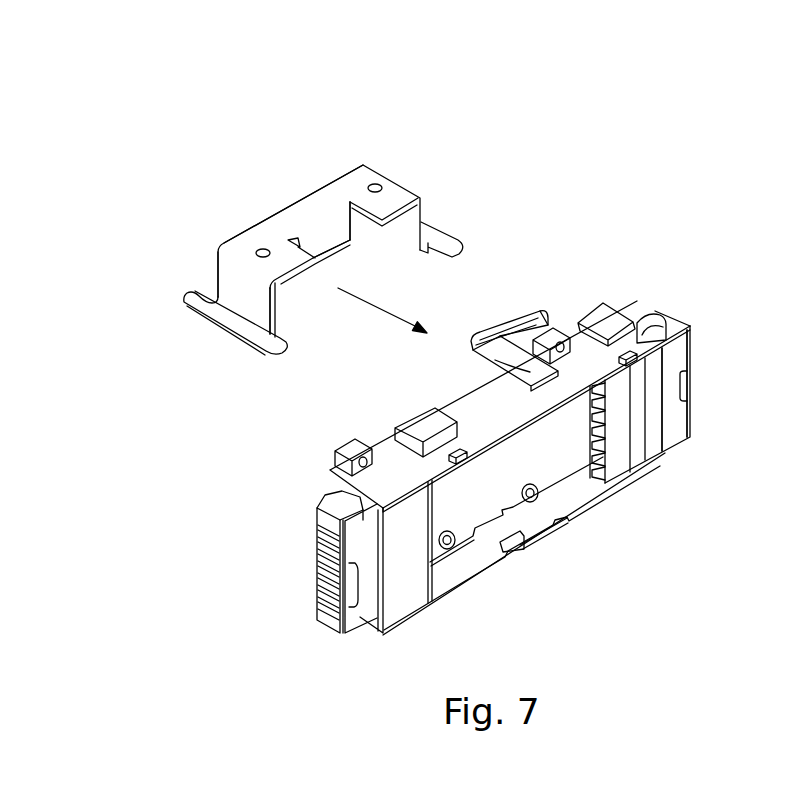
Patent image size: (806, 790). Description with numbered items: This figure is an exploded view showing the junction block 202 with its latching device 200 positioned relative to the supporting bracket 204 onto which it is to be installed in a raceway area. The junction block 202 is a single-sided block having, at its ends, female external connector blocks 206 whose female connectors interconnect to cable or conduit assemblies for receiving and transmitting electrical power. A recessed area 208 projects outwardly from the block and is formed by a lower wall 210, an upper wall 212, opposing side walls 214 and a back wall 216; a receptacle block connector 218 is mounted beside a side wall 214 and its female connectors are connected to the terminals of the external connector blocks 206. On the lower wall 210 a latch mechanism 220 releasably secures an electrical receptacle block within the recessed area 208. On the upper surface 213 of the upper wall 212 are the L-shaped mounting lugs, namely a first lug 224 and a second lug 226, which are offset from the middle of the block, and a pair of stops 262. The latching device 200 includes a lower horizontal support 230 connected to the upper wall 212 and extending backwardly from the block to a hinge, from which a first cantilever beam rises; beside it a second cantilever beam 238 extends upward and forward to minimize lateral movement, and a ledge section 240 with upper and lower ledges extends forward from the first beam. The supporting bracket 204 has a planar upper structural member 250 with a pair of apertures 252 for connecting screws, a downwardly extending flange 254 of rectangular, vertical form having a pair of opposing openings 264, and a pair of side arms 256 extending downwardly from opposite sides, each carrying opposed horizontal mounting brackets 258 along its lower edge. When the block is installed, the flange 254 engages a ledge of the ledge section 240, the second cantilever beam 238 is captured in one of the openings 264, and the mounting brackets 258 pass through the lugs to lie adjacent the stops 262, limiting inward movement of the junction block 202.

The latching device 200 is at (517, 305).
The junction block 202 is at (706, 377).
The supporting bracket 204 is at (367, 148).
The female external connector block 206 is at (304, 579).
The recessed area 208 is at (557, 477).
The lower wall 210 is at (608, 491).
The upper wall 212 is at (397, 462).
The upper surface 213 is at (510, 404).
The side wall 214 is at (637, 397).
The back wall 216 is at (488, 516).
The receptacle block connector 218 is at (603, 453).
The latch mechanism 220 is at (533, 558).
The first lug 224 is at (418, 415).
The second lug 226 is at (610, 305).
The lower horizontal support 230 is at (473, 362).
The second cantilever beam 238 is at (548, 325).
The ledge section 240 is at (503, 330).
The upper structural member 250 is at (308, 207).
The apertures 252 is at (378, 186).
The downwardly extending flange 254 is at (327, 238).
The side arms 256 is at (232, 279).
The mounting brackets 258 is at (185, 305).
The stops 262 is at (470, 454).
The openings 264 is at (348, 200).